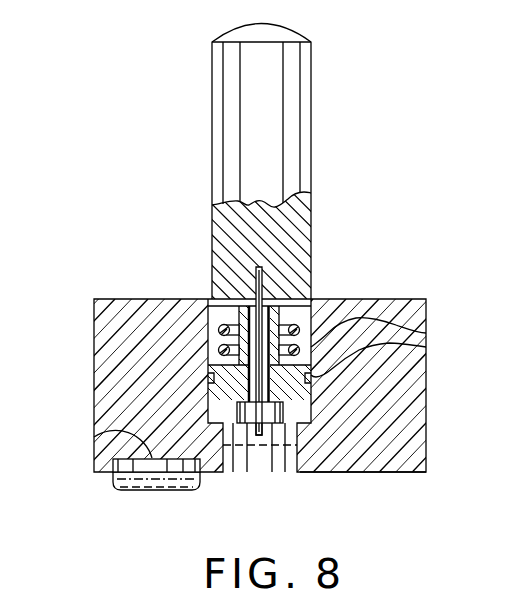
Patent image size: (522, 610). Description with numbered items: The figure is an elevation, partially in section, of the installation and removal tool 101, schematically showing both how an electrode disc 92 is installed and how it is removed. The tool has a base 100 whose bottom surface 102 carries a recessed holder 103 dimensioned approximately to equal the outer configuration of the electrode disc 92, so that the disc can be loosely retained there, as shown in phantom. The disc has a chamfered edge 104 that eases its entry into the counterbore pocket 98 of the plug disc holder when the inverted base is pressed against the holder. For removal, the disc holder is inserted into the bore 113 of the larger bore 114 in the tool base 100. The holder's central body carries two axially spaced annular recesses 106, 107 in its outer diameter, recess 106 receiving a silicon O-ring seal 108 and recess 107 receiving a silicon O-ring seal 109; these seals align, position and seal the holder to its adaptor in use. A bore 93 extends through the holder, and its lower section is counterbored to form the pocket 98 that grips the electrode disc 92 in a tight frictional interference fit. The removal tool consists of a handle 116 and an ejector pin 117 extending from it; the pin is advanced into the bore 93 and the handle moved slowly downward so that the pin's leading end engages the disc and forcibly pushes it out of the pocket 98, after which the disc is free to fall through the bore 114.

The installation and removal tool 101 is at (178, 161).
The handle 116 is at (311, 147).
The ejector pin 117 is at (265, 287).
The base 100 is at (30, 269).
The bottom surface 102 is at (390, 472).
The O-ring seal 109 is at (426, 333).
The annular recess 107 is at (426, 347).
The annular recess 106 is at (142, 224).
The O-ring seal 108 is at (144, 269).
The bore 113 is at (218, 330).
The bore 93 is at (210, 380).
The counterbore pocket 98 is at (210, 405).
The bore 114 is at (297, 456).
The recessed holder 103 is at (14, 434).
The electrode disc 92 is at (258, 462).
The chamfered edge 104 is at (80, 514).